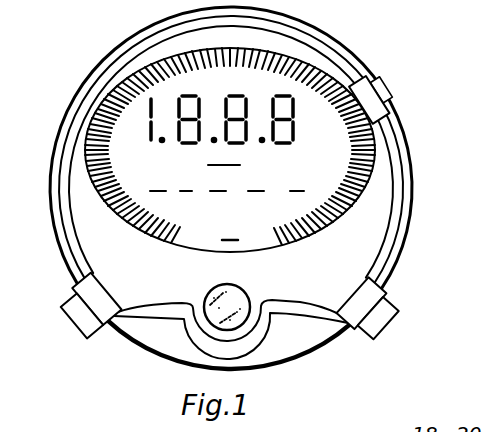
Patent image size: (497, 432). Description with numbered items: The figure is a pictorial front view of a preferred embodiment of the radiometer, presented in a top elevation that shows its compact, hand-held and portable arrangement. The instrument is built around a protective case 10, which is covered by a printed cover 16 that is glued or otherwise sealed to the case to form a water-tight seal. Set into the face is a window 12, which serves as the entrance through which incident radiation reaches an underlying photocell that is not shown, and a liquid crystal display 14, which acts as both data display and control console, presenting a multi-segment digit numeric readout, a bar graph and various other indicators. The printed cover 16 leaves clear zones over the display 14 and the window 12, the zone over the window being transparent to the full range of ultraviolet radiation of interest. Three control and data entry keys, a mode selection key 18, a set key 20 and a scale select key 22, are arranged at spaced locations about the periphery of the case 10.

The protective case 10 is at (404, 201).
The window 12 is at (257, 313).
The liquid crystal display (LCD) 14 is at (297, 172).
The printed cover 16 is at (95, 246).
The mode selection key 18 is at (78, 331).
The set key 20 is at (386, 322).
The scale select key 22 is at (393, 90).